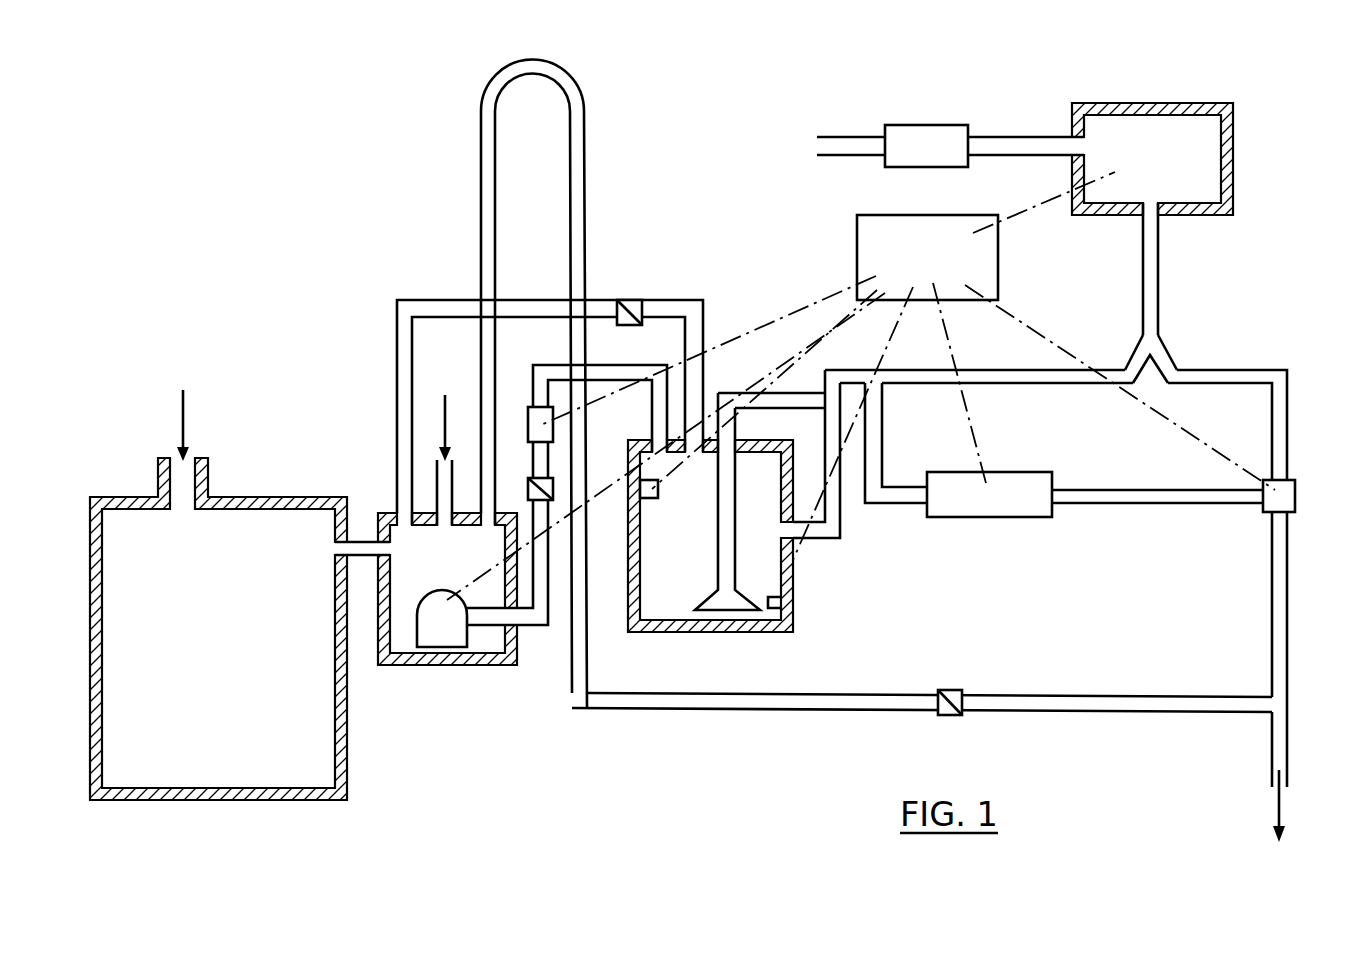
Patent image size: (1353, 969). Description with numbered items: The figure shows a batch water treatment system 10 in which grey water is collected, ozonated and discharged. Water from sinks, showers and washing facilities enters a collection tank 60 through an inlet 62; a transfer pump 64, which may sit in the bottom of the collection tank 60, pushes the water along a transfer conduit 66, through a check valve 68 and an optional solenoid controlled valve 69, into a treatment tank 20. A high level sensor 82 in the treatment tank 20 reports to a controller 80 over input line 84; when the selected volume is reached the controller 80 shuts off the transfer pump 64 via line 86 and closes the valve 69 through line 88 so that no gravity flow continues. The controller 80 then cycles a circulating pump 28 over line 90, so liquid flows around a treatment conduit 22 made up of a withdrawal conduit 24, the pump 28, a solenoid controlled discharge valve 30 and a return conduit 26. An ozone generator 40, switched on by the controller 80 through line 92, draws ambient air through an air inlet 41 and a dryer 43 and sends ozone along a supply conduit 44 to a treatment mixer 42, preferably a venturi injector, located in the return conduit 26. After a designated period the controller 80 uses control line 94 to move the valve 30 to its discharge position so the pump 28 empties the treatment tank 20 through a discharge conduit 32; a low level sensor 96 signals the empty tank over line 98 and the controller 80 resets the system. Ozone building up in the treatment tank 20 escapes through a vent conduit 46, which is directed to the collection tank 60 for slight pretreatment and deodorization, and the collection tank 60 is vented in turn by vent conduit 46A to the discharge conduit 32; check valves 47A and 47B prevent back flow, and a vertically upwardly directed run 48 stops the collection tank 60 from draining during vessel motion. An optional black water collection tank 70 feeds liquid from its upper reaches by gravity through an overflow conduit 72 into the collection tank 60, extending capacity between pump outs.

The water treatment system 10 is at (331, 174).
The treatment tank 20 is at (740, 632).
The treatment conduit 22 is at (1290, 384).
The withdrawal conduit 24 is at (904, 505).
The return conduit 26 is at (1007, 369).
The circulating pump 28 is at (1030, 518).
The solenoid controlled discharge valve 30 is at (1296, 492).
The discharge conduit 32 is at (1290, 742).
The ozone generator 40 is at (1165, 103).
The air inlet 41 is at (818, 147).
The treatment mixer 42 is at (1168, 353).
The dryer 43 is at (925, 125).
The supply conduit 44 is at (1160, 265).
The vent conduit 46 is at (607, 300).
The vent conduit 46A is at (1222, 712).
The check valve 47A is at (625, 300).
The check valve 47B is at (946, 692).
The vertically upwardly directed run 48 is at (578, 95).
The collection tank 60 is at (437, 666).
The inlet 62 is at (452, 458).
The transfer pump 64 is at (452, 642).
The transfer conduit 66 is at (548, 626).
The check valve 68 is at (553, 489).
The solenoid controlled valve 69 is at (530, 410).
The black water collection tank 70 is at (349, 762).
The overflow conduit 72 is at (357, 540).
The controller 80 is at (883, 215).
The high level sensor 82 is at (655, 498).
The input line 84 is at (812, 347).
The line 86 is at (827, 333).
The line 88 is at (744, 335).
The line 90 is at (990, 485).
The line 92 is at (1040, 197).
The control line 94 is at (1052, 342).
The low level sensor 96 is at (768, 600).
The line 98 is at (905, 320).